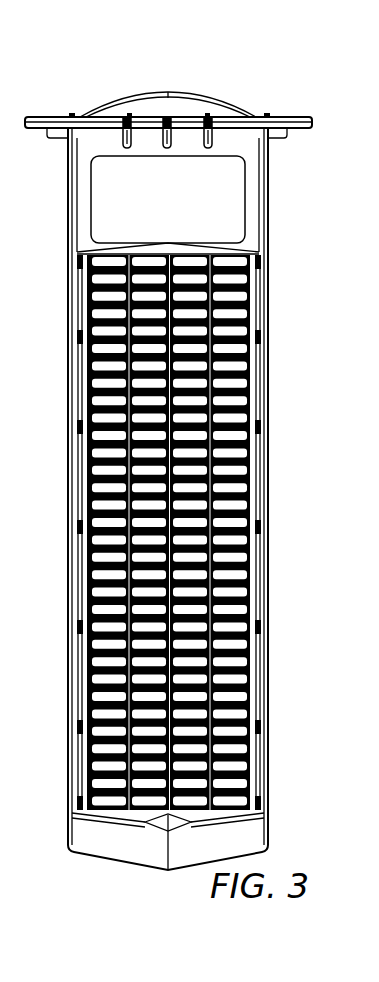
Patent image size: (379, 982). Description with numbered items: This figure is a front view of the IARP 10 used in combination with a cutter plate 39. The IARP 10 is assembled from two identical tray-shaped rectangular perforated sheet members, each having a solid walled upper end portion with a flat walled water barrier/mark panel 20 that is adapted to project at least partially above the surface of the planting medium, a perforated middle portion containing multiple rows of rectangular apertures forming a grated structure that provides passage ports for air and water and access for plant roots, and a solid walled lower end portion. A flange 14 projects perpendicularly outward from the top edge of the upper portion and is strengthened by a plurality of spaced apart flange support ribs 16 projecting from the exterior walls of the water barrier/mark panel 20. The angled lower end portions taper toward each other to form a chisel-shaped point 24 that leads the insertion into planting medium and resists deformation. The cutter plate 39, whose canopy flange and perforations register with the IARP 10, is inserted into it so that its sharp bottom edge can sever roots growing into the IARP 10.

The IARP 10 is at (274, 349).
The flange 14 is at (298, 116).
The flange support ribs 16 is at (125, 127).
The water barrier/mark panel 20 is at (168, 199).
The chisel-shaped point 24 is at (167, 873).
The cutter plate 39 is at (198, 98).